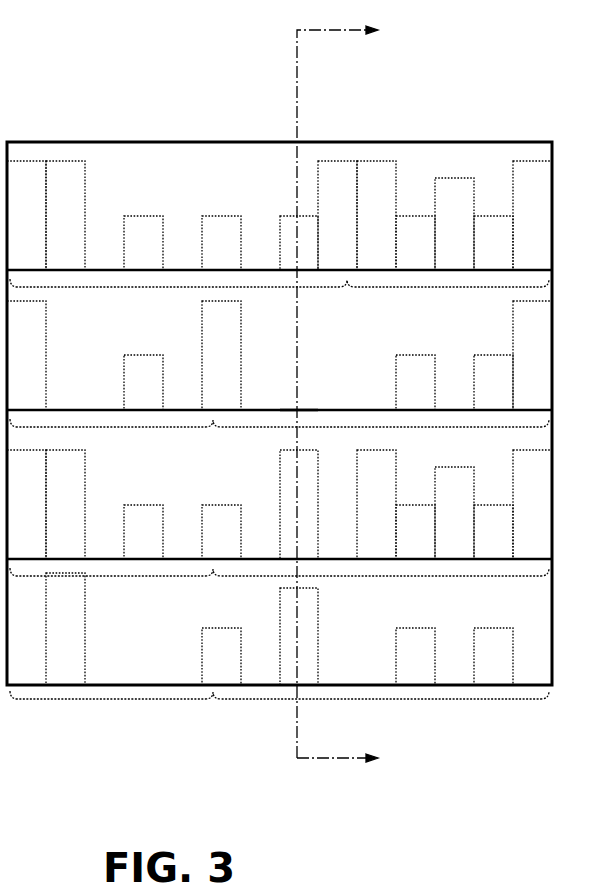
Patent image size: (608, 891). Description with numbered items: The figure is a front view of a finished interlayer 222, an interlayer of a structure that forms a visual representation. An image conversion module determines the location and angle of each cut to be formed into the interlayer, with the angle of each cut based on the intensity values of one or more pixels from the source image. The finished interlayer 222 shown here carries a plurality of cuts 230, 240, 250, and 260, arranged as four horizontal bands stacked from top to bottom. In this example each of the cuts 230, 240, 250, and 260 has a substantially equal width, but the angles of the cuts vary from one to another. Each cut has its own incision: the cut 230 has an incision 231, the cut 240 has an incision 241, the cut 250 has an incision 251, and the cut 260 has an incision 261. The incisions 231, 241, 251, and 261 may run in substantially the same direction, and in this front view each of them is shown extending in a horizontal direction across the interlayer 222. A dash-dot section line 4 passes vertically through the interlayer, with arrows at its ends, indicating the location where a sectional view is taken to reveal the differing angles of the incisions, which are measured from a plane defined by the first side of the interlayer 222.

The section line 4- 4 is at (345, 396).
The finished interlayer 222 is at (441, 142).
The cut 230 is at (279, 241).
The incision 231 is at (288, 270).
The cut 240 is at (279, 380).
The incision 241 is at (305, 410).
The cut 250 is at (279, 530).
The incision 251 is at (305, 559).
The cut 260 is at (279, 652).
The incision 261 is at (305, 685).